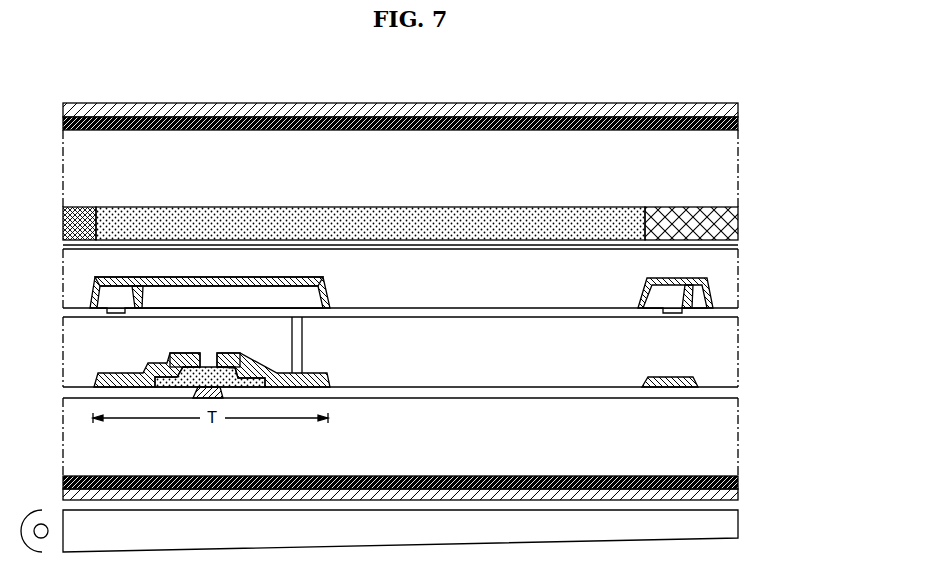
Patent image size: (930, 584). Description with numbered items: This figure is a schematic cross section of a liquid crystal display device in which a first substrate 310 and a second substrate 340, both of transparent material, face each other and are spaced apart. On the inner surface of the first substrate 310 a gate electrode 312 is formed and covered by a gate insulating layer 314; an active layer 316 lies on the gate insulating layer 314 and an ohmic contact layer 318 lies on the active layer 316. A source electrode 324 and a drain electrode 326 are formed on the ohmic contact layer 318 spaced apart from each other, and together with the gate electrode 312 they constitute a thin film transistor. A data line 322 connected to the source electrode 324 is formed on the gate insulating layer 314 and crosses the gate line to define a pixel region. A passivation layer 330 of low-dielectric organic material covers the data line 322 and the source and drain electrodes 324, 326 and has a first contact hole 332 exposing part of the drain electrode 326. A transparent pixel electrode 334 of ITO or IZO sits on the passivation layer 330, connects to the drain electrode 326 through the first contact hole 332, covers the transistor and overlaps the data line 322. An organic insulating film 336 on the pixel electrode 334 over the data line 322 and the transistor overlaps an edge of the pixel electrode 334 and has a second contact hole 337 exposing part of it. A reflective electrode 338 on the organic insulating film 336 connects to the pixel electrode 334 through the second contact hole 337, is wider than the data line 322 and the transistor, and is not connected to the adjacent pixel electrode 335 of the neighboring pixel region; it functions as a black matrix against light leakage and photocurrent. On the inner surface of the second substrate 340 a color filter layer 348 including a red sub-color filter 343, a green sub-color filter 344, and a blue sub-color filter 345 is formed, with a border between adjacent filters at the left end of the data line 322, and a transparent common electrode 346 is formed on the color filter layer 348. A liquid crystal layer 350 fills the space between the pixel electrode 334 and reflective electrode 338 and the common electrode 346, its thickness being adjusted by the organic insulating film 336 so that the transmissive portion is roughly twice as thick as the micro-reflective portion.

The first substrate 310 is at (717, 453).
The gate electrode 312 is at (200, 399).
The gate insulating layer 314 is at (394, 399).
The active layer 316 is at (208, 367).
The ohmic contact layer 318 is at (166, 356).
The data line 322 is at (651, 389).
The source electrode 324 is at (185, 367).
The drain electrode 326 is at (262, 374).
The passivation layer 330 is at (510, 330).
The first contact hole 332 is at (297, 317).
The pixel electrode 334 is at (425, 313).
The adjacent pixel electrode 335 is at (732, 313).
The organic insulating film 336 is at (272, 298).
The second contact hole 337 is at (138, 289).
The reflective electrode 338 is at (238, 281).
The second substrate 340 is at (713, 163).
The red sub-color filter 343 is at (89, 207).
The green sub-color filter 344 is at (350, 217).
The blue sub-color filter 345 is at (684, 207).
The common electrode 346 is at (437, 245).
The color filter layer 348 is at (687, 162).
The liquid crystal layer 350 is at (720, 280).